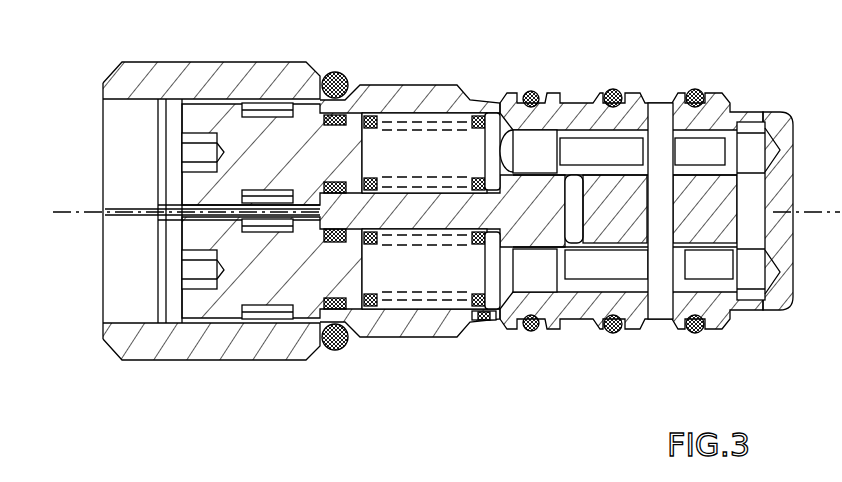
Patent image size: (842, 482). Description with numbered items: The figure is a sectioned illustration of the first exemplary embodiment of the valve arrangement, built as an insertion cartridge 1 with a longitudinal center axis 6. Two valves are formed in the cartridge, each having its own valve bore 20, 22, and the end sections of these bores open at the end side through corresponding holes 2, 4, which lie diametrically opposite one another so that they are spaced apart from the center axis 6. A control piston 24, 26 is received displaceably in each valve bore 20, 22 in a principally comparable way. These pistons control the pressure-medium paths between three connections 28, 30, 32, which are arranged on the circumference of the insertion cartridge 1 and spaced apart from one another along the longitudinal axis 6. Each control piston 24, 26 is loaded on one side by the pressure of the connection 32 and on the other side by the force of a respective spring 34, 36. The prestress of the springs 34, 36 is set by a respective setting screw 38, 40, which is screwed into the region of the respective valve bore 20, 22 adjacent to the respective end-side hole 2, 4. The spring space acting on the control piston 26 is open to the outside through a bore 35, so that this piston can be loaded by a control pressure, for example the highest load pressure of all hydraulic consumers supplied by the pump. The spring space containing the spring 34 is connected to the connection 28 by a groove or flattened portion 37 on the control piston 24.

The insertion cartridge 1 is at (438, 358).
The hole 2 is at (172, 300).
The hole 4 is at (133, 300).
The center axis 6 is at (70, 210).
The valve bore 20 is at (593, 110).
The valve bore 22 is at (592, 330).
The control piston 24 is at (527, 164).
The control piston 26 is at (527, 284).
The connection 28 is at (565, 343).
The connection 30 is at (665, 81).
The connection 32 is at (744, 93).
The spring 34 is at (430, 125).
The bore 35 is at (481, 322).
The spring 36 is at (397, 300).
The groove or flattened portion 37 is at (500, 100).
The setting screw 38 is at (275, 164).
The setting screw 40 is at (284, 283).